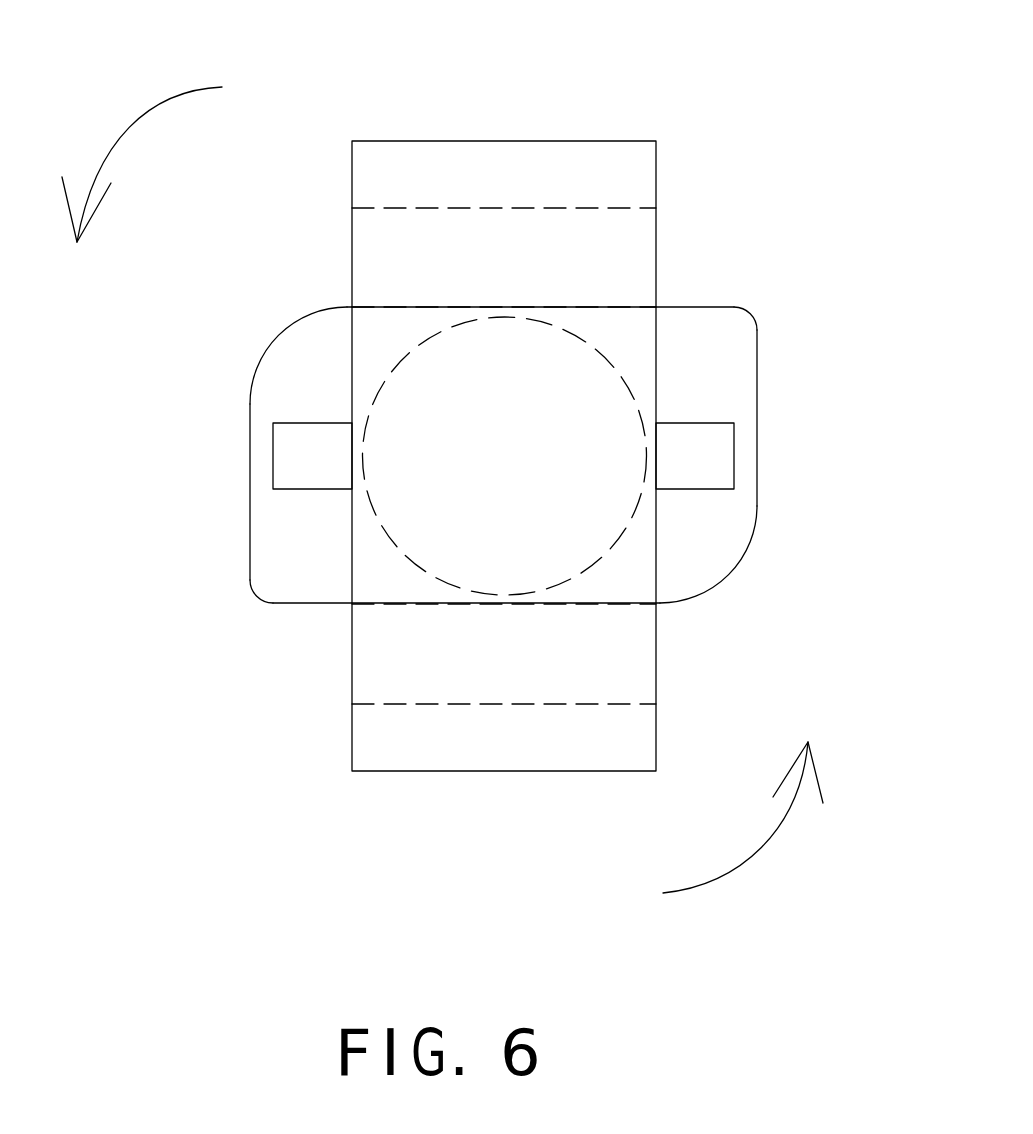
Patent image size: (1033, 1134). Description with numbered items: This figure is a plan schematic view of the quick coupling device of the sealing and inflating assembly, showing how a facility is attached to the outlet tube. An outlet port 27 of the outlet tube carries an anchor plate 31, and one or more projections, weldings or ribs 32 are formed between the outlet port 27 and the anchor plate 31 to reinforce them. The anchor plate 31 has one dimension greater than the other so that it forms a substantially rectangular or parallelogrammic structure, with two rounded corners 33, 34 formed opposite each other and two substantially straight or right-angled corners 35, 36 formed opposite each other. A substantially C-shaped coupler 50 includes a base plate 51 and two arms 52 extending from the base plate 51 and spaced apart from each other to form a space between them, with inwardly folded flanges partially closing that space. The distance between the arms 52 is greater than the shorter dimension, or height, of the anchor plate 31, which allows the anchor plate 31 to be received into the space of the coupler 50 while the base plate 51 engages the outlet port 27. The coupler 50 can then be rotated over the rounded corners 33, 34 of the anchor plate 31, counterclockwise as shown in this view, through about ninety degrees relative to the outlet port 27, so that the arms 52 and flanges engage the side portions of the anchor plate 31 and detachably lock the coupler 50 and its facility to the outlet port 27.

The outlet port 27 is at (400, 507).
The anchor plate 31 is at (262, 496).
The rib 32 is at (707, 468).
The rounded corner 33 is at (313, 305).
The rounded corner 34 is at (723, 580).
The right-angled corner 35 is at (262, 600).
The right-angled corner 36 is at (743, 311).
The coupler 50 is at (385, 143).
The base plate 51 is at (637, 250).
The arm 52 is at (597, 157).